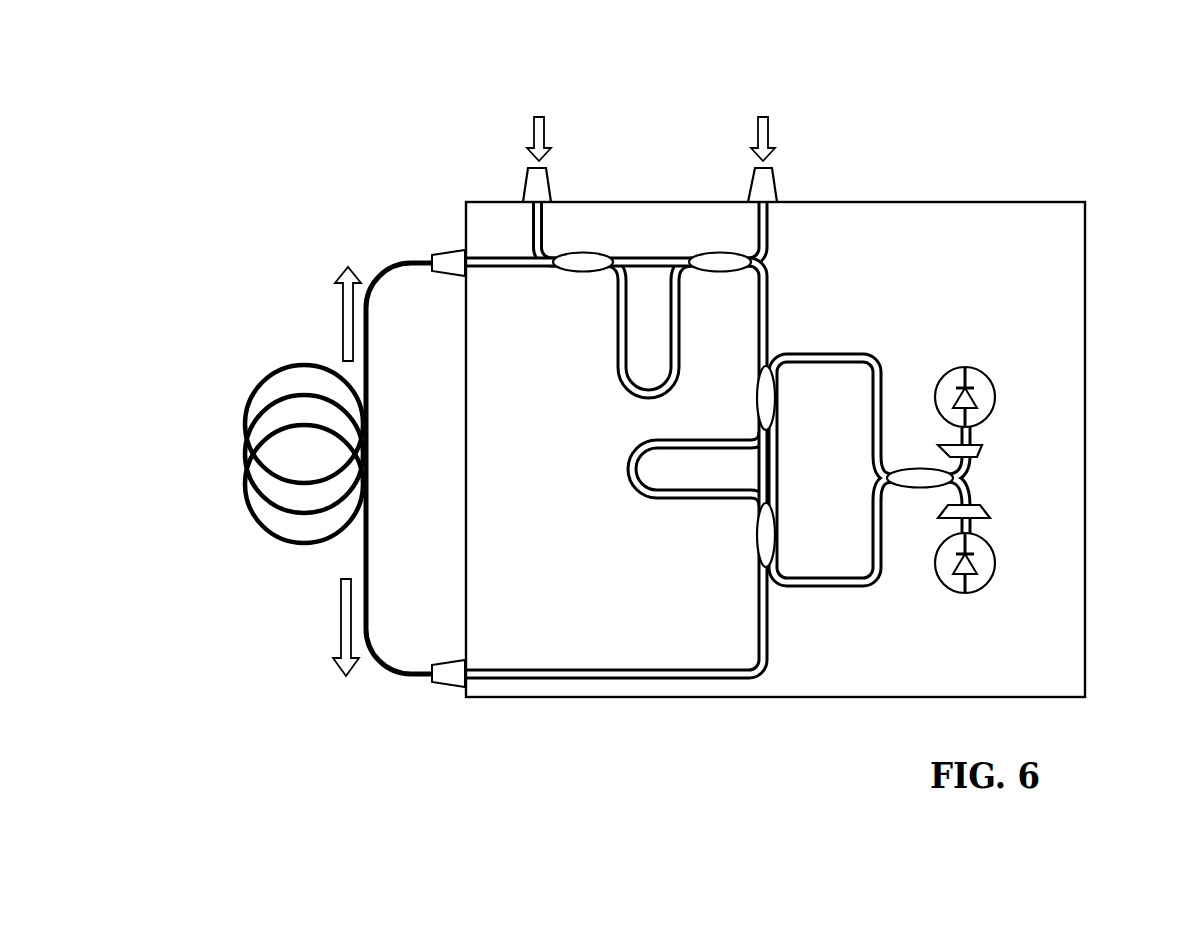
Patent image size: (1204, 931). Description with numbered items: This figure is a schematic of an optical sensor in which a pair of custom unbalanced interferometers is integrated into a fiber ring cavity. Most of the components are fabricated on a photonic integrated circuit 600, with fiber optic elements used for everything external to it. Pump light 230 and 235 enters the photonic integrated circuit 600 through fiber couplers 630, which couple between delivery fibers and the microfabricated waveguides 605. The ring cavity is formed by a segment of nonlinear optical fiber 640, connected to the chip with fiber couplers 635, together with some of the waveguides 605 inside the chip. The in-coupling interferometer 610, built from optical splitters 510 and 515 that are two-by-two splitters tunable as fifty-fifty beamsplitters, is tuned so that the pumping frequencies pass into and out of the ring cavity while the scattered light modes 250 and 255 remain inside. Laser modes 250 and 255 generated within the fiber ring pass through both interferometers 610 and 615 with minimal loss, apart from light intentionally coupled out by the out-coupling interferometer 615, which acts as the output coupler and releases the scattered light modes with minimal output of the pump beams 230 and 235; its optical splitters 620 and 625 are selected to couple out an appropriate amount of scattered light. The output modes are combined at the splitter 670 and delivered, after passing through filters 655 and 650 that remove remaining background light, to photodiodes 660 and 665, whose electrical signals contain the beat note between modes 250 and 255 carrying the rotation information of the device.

The pump light 230 is at (556, 167).
The pump light 235 is at (743, 167).
The scattered light mode 250 is at (303, 627).
The scattered light mode 255 is at (319, 314).
The optical splitter 510 is at (582, 273).
The optical splitter 515 is at (720, 270).
The photonic integrated circuit 600 is at (958, 202).
The microfabricated waveguides 605 is at (878, 370).
The in-coupling interferometer 610 is at (640, 356).
The out-coupling interferometer 615 is at (685, 469).
The optical splitter 620 is at (760, 406).
The optical splitter 625 is at (757, 538).
The fiber couplers 630 is at (763, 185).
The fiber couplers 635 is at (448, 264).
The nonlinear optical fiber 640 is at (300, 442).
The filter 650 is at (980, 517).
The filter 655 is at (978, 453).
The photodiode 660 is at (965, 580).
The photodiode 665 is at (962, 382).
The splitter 670 is at (920, 488).